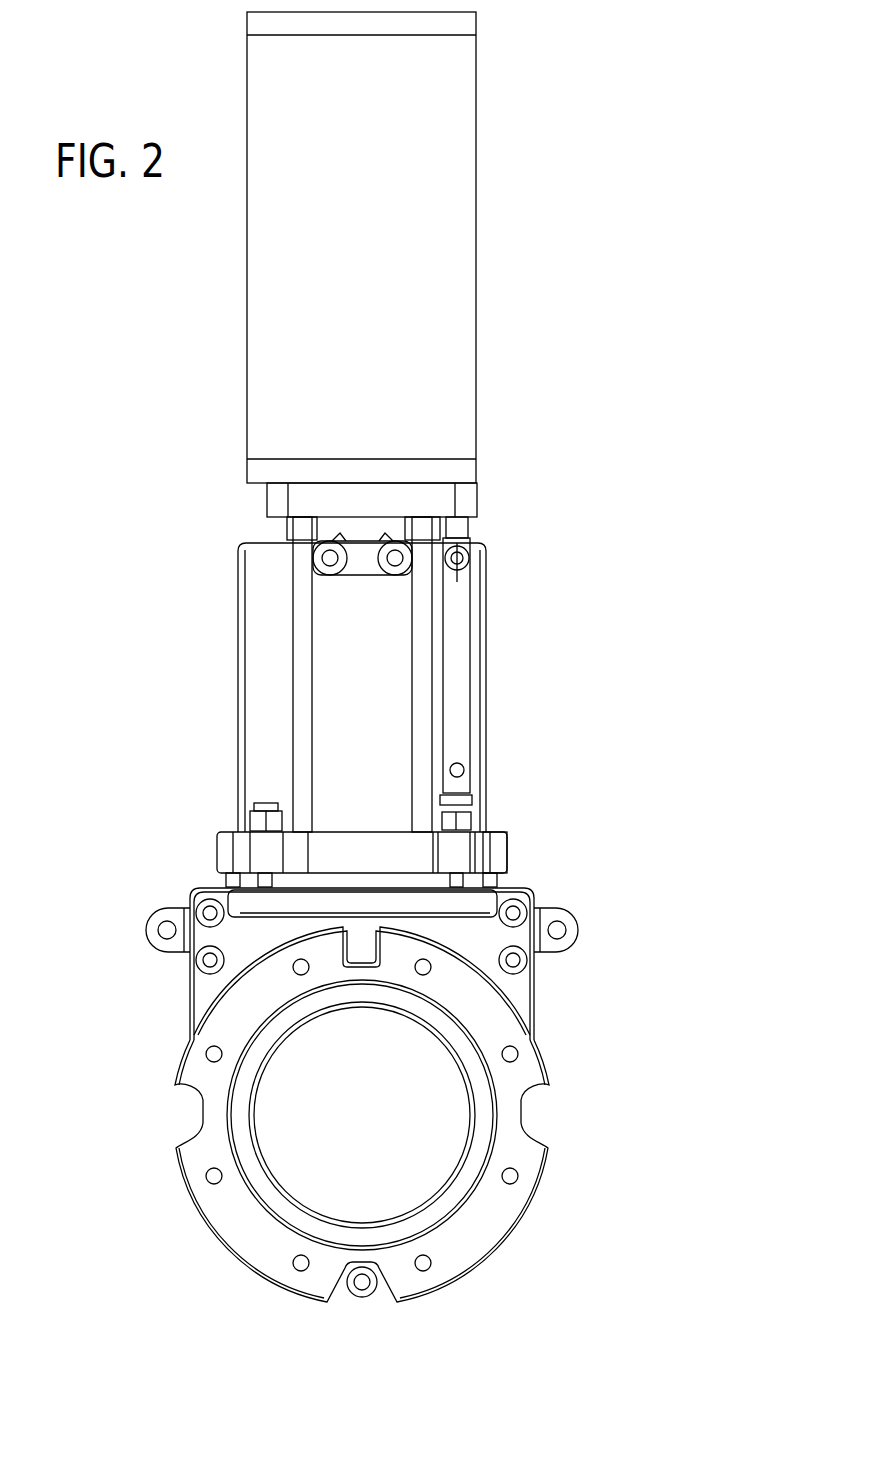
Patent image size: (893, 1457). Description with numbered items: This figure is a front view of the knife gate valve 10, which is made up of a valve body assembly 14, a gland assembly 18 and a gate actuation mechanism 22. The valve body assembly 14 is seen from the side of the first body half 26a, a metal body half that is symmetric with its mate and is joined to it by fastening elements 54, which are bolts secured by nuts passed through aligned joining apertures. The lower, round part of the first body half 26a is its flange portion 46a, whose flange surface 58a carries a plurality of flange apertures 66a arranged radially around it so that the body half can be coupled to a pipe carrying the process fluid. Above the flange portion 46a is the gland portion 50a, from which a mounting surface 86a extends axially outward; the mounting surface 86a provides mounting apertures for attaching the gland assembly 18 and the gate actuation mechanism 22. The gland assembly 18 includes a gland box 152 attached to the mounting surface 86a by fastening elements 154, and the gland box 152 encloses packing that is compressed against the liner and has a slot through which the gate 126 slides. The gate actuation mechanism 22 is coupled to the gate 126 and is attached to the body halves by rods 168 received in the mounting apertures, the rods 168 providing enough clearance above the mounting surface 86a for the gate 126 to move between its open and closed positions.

The knife gate valve 10 is at (626, 236).
The valve body assembly 14 is at (664, 943).
The gland assembly 18 is at (534, 808).
The gate actuation mechanism 22 is at (478, 241).
The first body half 26a is at (668, 1158).
The flange portion 46a is at (548, 1250).
The gland portion 50a is at (560, 984).
The fastening element 54 is at (206, 958).
The flange surface 58a is at (472, 1240).
The flange apertures 66a is at (214, 1052).
The mounting surface 86a is at (247, 887).
The gate 126 is at (268, 583).
The gland box 152 is at (266, 803).
The fastening elements 154 is at (464, 800).
The rods 168 is at (422, 673).